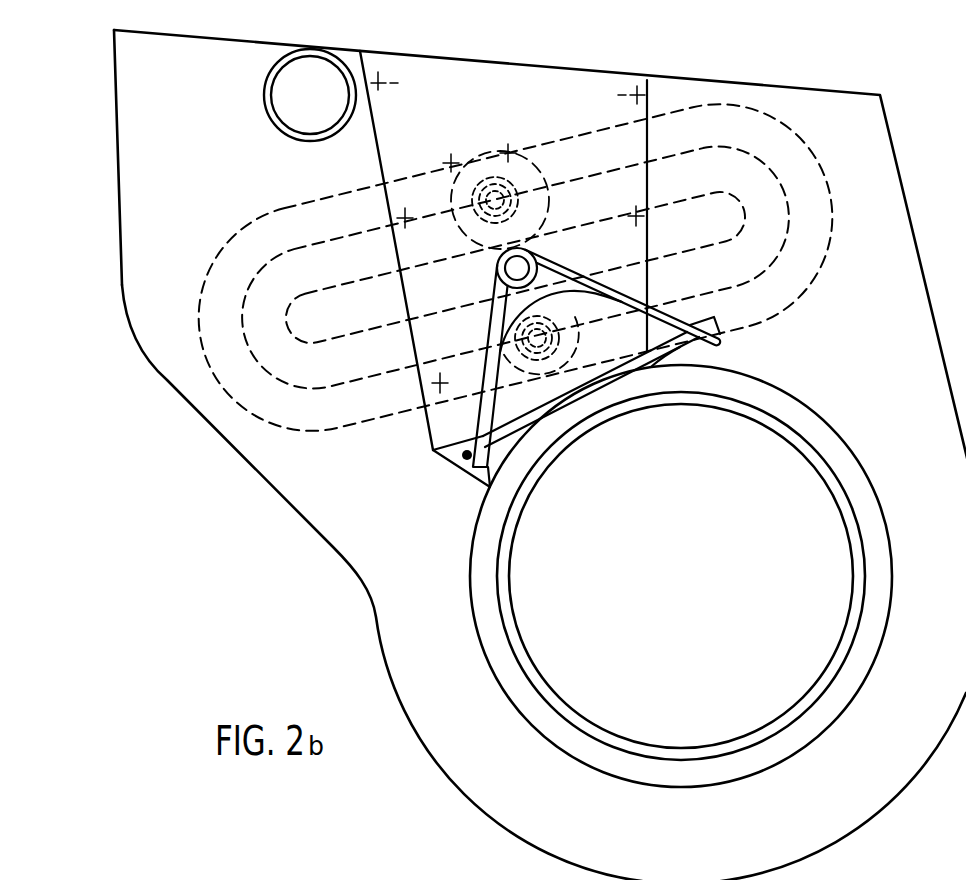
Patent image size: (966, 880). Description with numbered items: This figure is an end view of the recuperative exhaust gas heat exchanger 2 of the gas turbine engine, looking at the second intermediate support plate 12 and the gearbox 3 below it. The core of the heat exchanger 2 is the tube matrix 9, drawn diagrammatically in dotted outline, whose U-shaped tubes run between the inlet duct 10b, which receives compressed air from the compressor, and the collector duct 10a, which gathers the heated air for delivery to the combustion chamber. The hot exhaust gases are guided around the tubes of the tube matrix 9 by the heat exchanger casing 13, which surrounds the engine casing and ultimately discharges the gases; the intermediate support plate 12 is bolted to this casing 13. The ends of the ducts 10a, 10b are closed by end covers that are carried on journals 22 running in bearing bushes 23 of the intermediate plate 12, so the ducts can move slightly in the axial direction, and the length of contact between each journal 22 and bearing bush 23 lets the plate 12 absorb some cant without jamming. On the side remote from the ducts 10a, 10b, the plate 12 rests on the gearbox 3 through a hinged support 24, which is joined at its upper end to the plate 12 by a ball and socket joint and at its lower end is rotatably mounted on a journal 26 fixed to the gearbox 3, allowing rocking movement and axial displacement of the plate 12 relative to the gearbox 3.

The recuperative exhaust gas heat exchanger 2 is at (896, 361).
The gearbox 3 is at (876, 505).
The tube matrix 9 is at (826, 228).
The collector duct 10a is at (490, 337).
The inlet duct 10b is at (462, 181).
The second intermediate support plate 12 is at (600, 88).
The heat exchanger casing 13 is at (114, 100).
The journal 22 is at (511, 185).
The bearing bush 23 is at (517, 188).
The hinged support 24 is at (433, 449).
The journal 26 is at (582, 400).